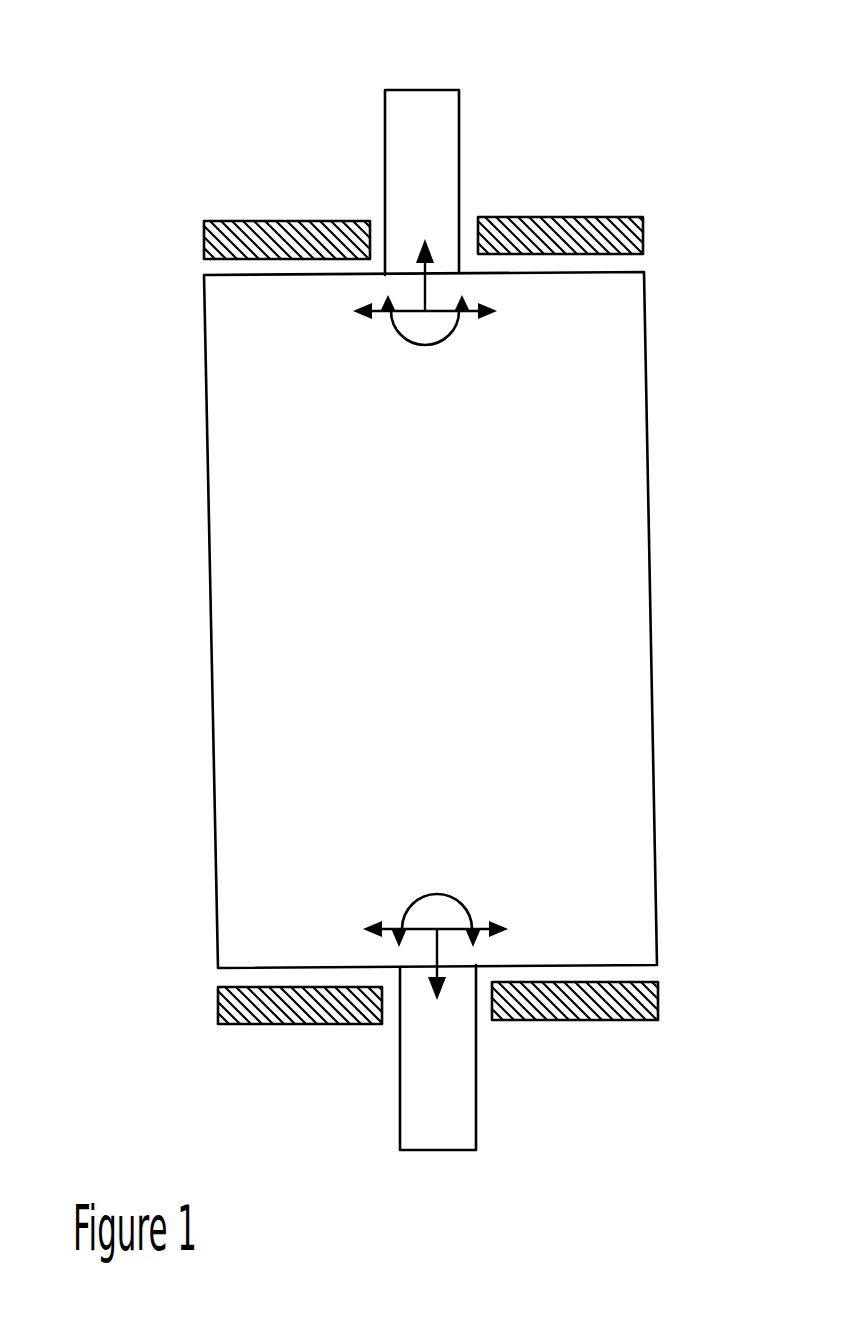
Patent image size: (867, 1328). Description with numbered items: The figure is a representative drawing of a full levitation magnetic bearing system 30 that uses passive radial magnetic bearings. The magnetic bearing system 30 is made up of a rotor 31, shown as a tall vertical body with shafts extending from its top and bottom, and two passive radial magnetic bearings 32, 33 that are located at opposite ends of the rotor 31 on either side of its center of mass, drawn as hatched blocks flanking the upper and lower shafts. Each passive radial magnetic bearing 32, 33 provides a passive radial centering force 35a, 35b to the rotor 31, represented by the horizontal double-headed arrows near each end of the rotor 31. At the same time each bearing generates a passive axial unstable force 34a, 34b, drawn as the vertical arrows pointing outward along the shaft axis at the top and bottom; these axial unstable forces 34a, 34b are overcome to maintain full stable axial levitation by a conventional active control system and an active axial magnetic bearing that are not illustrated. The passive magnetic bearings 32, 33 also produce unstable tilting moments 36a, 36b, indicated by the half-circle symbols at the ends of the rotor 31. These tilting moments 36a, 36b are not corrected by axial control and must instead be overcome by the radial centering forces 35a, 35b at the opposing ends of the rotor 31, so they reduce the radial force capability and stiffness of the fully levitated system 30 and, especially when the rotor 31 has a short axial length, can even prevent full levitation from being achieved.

The magnetic bearing system 30 is at (115, 52).
The rotor 31 is at (648, 496).
The passive radial magnetic bearing 32 is at (644, 228).
The passive radial magnetic bearing 33 is at (659, 994).
The passive axial unstable force 34a is at (427, 285).
The passive radial centering force 35a is at (481, 308).
The unstable tilting moment 36a is at (425, 346).
The passive axial unstable force 34b is at (440, 965).
The passive radial centering force 35b is at (505, 928).
The unstable tilting moment 36b is at (447, 893).